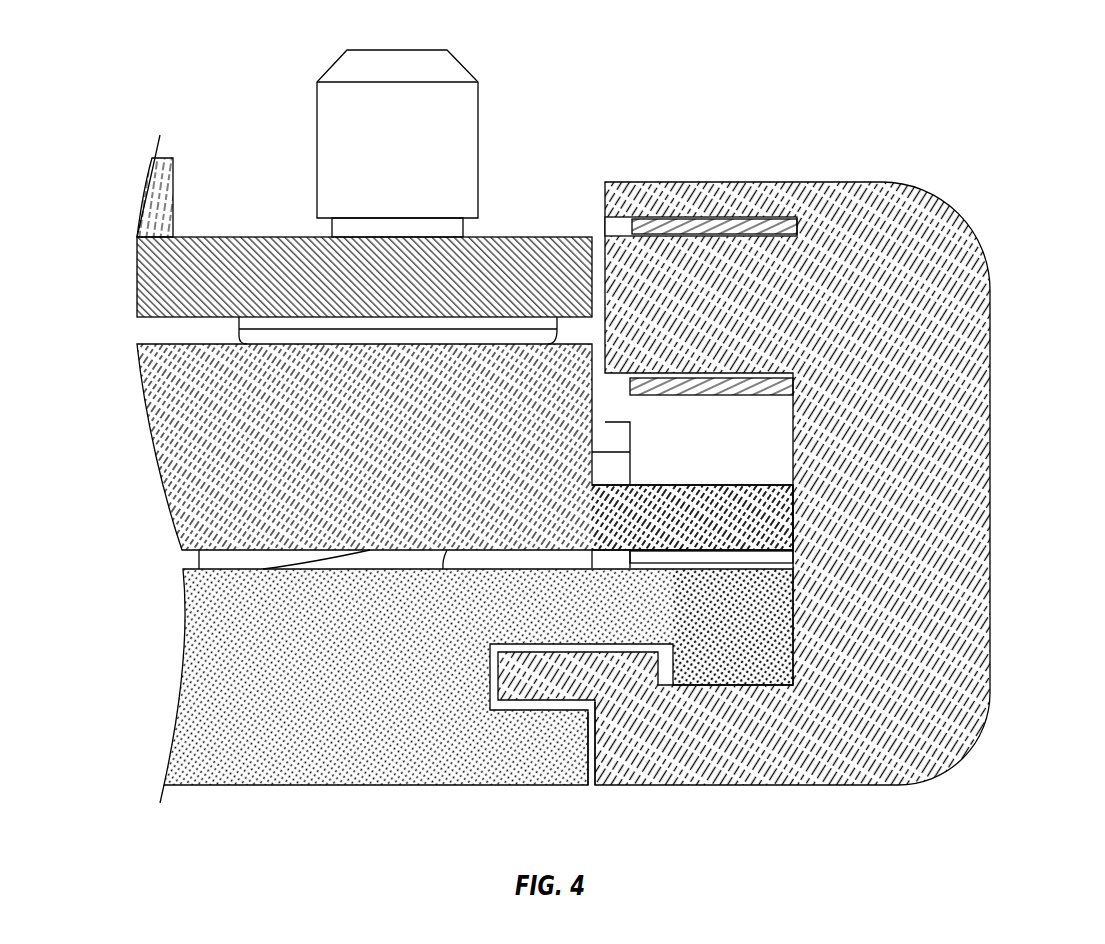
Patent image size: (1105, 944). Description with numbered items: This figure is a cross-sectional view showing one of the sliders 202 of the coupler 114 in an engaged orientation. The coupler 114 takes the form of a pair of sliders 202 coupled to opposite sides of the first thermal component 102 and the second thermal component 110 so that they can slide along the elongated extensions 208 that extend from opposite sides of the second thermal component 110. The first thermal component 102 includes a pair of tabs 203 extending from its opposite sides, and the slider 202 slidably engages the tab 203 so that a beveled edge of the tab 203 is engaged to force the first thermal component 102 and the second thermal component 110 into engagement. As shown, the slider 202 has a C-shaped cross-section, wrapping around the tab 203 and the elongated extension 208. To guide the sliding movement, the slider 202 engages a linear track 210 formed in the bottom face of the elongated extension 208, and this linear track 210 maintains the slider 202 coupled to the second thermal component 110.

The coupler 114 is at (601, 445).
The first thermal component 102 is at (450, 385).
The second thermal component 110 is at (385, 780).
The slider 202 is at (990, 686).
The tab 203 is at (745, 515).
The elongated extension 208 is at (745, 610).
The linear track 210 is at (604, 799).